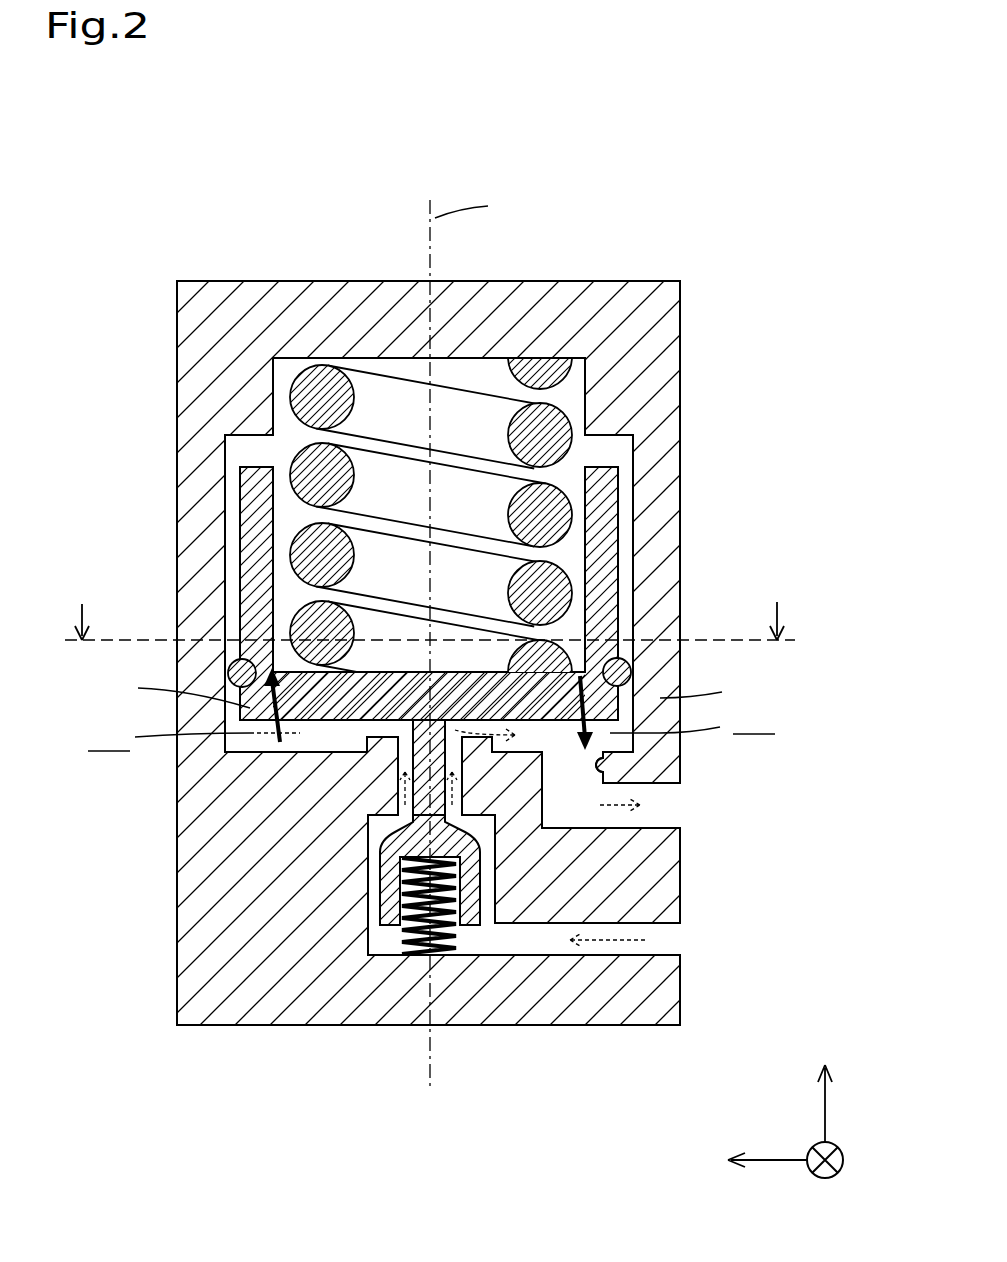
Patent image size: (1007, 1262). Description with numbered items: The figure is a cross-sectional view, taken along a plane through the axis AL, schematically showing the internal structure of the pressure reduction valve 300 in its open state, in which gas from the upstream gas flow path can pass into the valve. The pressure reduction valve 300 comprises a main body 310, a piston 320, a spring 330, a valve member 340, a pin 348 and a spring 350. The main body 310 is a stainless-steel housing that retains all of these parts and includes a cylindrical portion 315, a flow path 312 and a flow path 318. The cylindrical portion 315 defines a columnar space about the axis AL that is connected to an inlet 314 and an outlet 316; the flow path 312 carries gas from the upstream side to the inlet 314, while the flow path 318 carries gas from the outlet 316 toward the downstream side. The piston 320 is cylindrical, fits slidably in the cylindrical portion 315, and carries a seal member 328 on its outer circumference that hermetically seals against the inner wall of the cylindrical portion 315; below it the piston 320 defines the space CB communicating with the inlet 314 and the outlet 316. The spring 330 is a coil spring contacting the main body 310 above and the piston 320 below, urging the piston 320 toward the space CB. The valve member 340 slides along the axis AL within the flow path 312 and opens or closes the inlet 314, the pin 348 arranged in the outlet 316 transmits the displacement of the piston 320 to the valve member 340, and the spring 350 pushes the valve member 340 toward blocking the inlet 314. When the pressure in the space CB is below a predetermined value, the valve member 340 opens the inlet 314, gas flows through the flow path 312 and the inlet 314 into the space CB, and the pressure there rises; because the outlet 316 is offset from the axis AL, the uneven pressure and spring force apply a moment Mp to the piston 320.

The pressure reduction valve 300 is at (745, 213).
The main body 310 is at (685, 350).
The flow path 312 is at (650, 945).
The inlet 314 is at (402, 760).
The cylindrical portion 315 is at (662, 490).
The outlet 316 is at (608, 764).
The flow path 318 is at (650, 815).
The piston 320 is at (612, 556).
The seal member 328 is at (640, 667).
The spring 330 is at (318, 380).
The valve member 340 is at (378, 870).
The pin 348 is at (470, 790).
The spring 350 is at (400, 950).